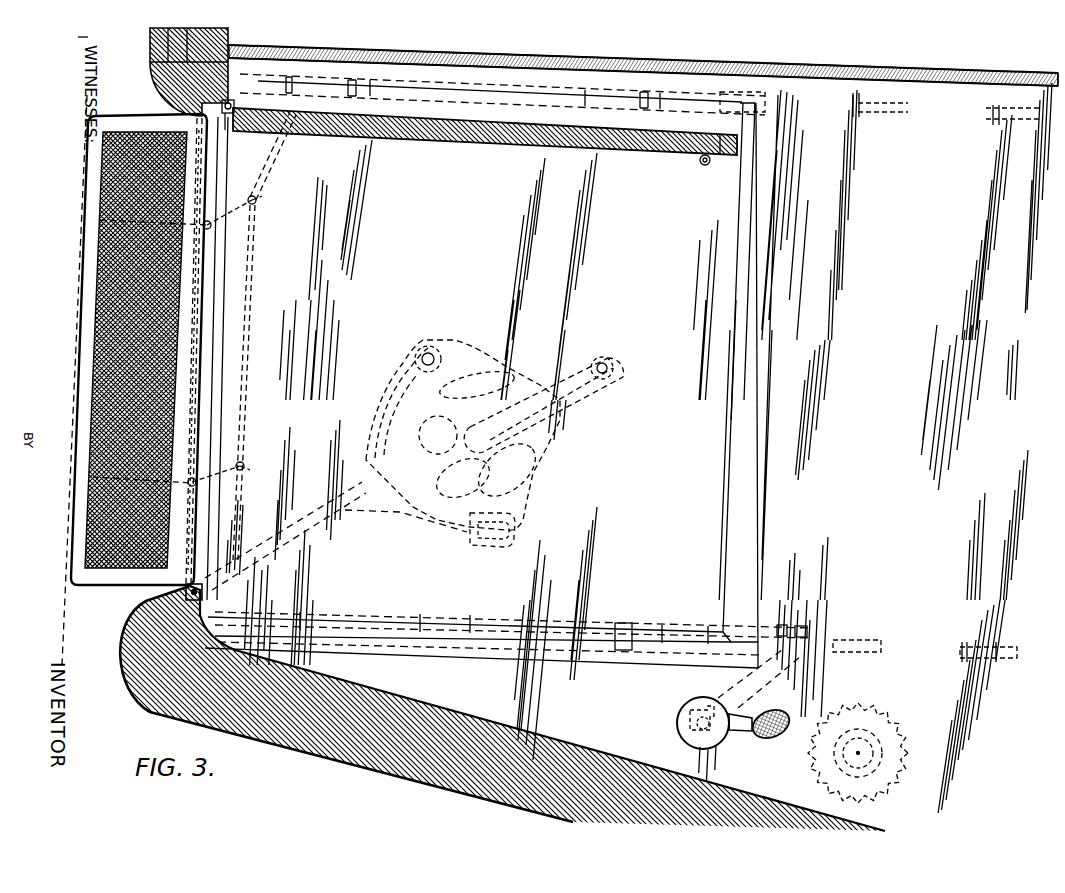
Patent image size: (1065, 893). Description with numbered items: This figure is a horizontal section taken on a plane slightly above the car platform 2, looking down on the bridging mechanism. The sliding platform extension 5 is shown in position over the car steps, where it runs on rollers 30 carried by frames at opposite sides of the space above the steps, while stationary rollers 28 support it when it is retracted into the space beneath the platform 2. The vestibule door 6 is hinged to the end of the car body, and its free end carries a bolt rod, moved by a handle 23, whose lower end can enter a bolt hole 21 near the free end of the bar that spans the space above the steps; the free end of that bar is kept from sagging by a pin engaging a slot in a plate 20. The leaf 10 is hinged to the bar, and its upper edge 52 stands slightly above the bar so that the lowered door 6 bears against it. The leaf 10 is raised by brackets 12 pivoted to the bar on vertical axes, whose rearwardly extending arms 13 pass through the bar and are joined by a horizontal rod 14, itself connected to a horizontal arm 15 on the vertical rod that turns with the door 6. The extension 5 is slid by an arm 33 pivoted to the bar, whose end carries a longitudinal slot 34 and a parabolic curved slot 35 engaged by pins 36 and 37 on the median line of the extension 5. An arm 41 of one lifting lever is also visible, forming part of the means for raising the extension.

The platform 2 is at (906, 448).
The sliding platform extension 5 is at (700, 541).
The vestibule door 6 is at (521, 140).
The leaf 10 is at (80, 520).
The brackets 12 is at (68, 447).
The rearwardly extending arms 13 is at (258, 208).
The horizontal rod 14 is at (250, 322).
The horizontal arm 15 is at (308, 125).
The plate 20 is at (497, 710).
The bolt hole 21 is at (205, 586).
The handle 23 is at (704, 166).
The stationary rollers 28 is at (870, 117).
The rollers 30 is at (299, 616).
The arm 33 is at (320, 546).
The longitudinal slot 34 is at (578, 408).
The curved slot 35 is at (468, 547).
The pin 36 is at (616, 358).
The pin 37 is at (410, 353).
The arm 41 is at (738, 699).
The upper edge 52 is at (200, 405).